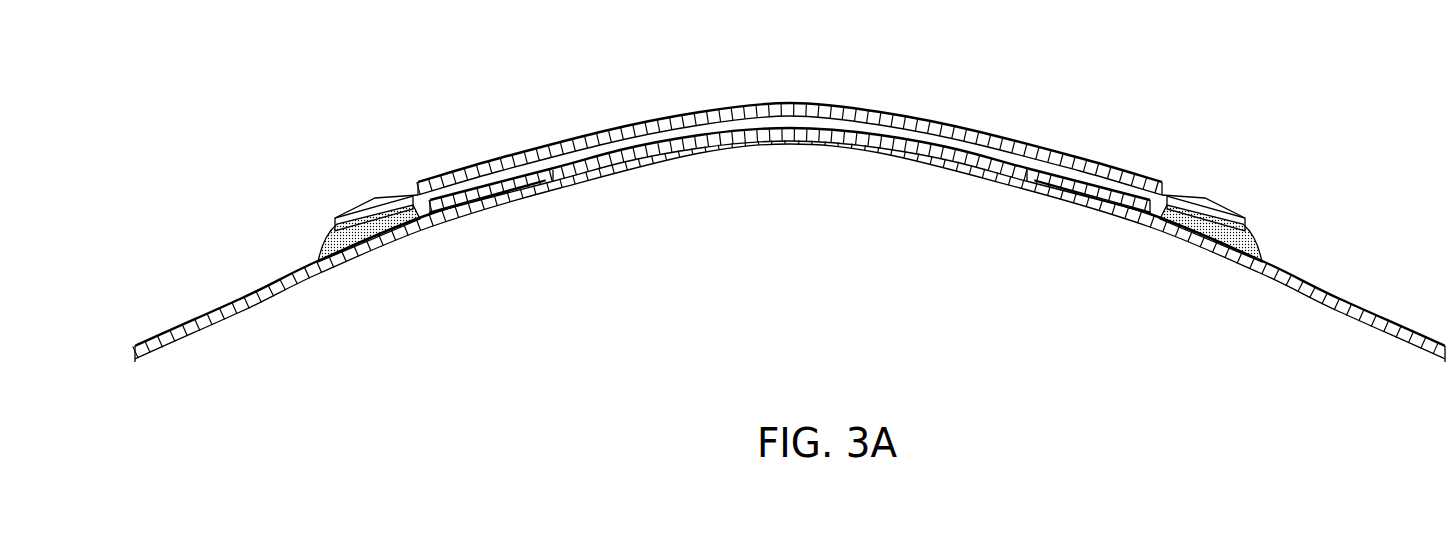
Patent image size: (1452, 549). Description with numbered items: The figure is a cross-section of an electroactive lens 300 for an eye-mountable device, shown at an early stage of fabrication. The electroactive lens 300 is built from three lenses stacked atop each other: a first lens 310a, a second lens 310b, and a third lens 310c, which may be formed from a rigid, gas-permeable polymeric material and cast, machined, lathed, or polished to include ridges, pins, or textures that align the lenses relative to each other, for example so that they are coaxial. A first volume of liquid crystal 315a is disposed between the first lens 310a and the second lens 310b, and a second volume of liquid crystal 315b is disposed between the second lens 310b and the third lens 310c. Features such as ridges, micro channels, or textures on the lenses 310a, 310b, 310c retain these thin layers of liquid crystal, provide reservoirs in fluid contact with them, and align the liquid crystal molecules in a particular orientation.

The electroactive lens 300 is at (345, 151).
The first lens 310a is at (858, 110).
The second lens 310b is at (935, 138).
The third lens 310c is at (965, 165).
The first volume of liquid crystal 315a is at (1090, 190).
The second volume of liquid crystal 315b is at (1215, 235).